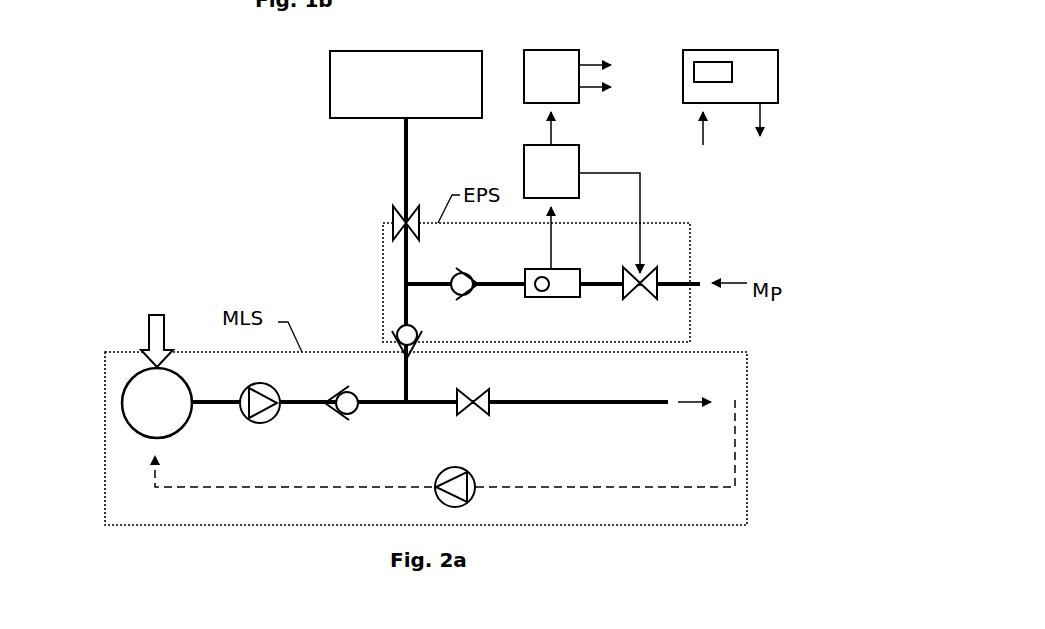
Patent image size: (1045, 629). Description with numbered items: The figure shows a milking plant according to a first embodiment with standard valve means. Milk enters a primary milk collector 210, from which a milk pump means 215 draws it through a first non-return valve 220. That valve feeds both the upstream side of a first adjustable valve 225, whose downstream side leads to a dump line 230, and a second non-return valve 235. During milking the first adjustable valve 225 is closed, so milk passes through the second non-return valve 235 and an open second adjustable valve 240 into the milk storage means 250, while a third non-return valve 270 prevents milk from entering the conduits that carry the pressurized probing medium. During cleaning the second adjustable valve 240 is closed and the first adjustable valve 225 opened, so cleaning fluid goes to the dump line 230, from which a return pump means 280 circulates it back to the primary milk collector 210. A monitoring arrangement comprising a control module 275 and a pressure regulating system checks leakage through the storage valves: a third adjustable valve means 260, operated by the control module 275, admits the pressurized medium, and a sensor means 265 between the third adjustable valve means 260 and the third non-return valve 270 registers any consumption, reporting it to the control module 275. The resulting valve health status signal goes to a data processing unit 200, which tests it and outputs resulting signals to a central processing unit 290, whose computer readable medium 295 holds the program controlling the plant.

The data processing unit 200 is at (572, 77).
The primary milk collector 210 is at (128, 376).
The milk pump means 215 is at (235, 422).
The first non-return valve 220 is at (316, 425).
The first adjustable valve 225 is at (452, 424).
The dump line 230 is at (578, 424).
The second non-return valve 235 is at (368, 326).
The second adjustable valve 240 is at (394, 213).
The milk storage means 250 is at (330, 85).
The third adjustable valve means 260 is at (628, 294).
The sensor means 265 is at (528, 252).
The third non-return valve 270 is at (472, 298).
The control module 275 is at (582, 158).
The return pump means 280 is at (489, 477).
The central processing unit 290 is at (743, 50).
The computer readable medium 295 is at (692, 50).